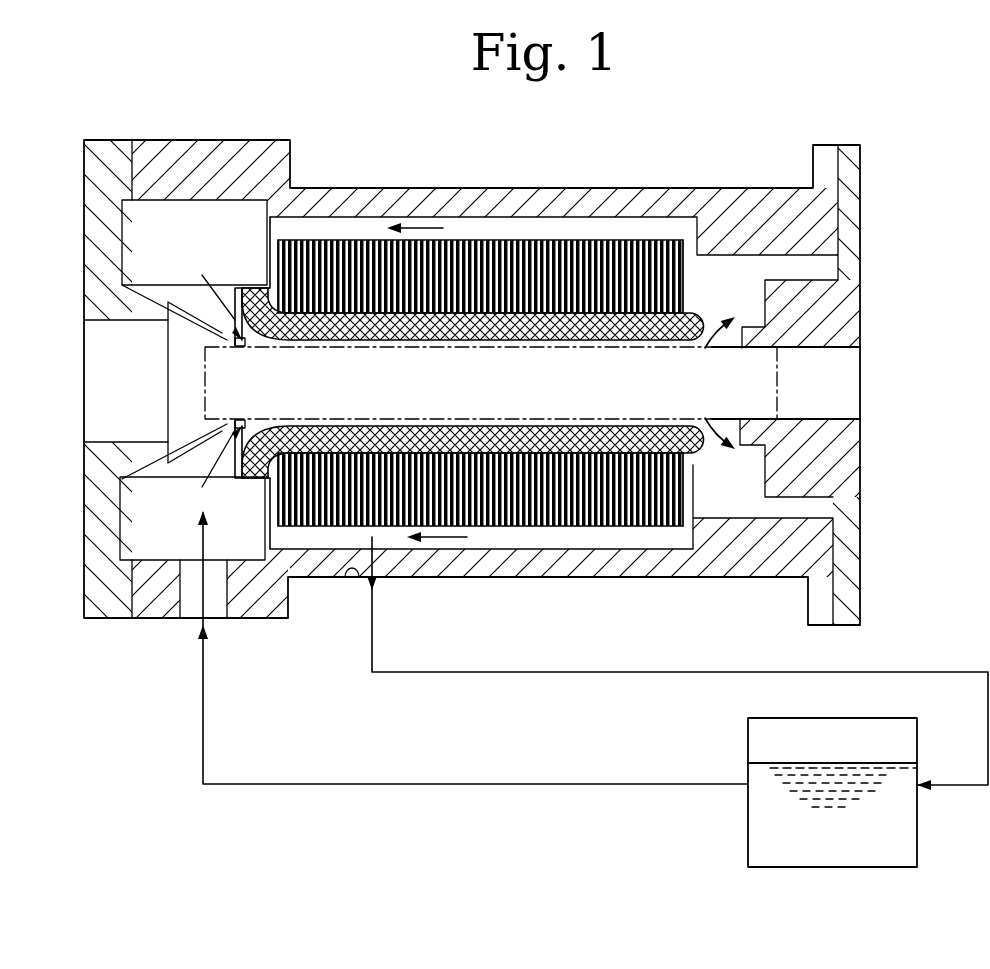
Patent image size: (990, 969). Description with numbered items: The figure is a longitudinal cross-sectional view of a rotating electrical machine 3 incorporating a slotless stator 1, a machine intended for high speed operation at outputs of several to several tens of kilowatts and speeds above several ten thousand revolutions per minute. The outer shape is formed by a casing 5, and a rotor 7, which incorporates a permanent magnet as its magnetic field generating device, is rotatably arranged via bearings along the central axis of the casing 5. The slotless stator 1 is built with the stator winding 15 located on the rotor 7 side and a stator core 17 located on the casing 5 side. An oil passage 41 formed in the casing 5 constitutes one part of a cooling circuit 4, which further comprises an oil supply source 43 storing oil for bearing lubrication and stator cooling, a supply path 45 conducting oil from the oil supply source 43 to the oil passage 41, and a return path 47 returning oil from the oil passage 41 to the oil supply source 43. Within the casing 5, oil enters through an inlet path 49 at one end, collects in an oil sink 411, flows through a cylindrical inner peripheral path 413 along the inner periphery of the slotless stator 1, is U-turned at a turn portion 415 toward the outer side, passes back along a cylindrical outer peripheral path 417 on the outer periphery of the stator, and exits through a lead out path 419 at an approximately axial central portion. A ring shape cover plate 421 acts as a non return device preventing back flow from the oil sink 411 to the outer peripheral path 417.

The slotless stator 1 is at (633, 141).
The rotating electrical machine 3 is at (473, 378).
The cooling circuit 4 is at (593, 702).
The casing 5 is at (236, 152).
The rotor 7 is at (775, 383).
The stator winding 15 is at (710, 308).
The stator core 17 is at (663, 248).
The oil passage 41 is at (533, 339).
The oil supply source 43 is at (917, 834).
The supply path 45 is at (572, 788).
The return path 47 is at (684, 670).
The inlet path 49 is at (185, 600).
The oil sink 411 is at (137, 522).
The inner peripheral path 413 is at (257, 420).
The turn portion 415 is at (748, 473).
The outer peripheral path 417 is at (585, 535).
The lead out path 419 is at (352, 572).
The cover plate 421 is at (267, 535).